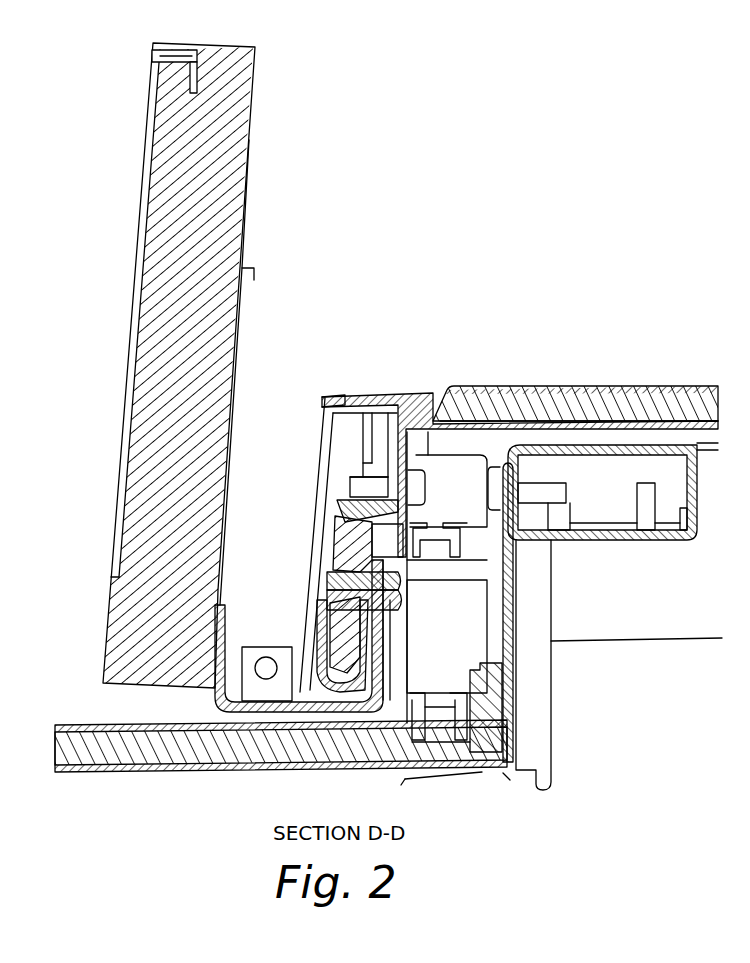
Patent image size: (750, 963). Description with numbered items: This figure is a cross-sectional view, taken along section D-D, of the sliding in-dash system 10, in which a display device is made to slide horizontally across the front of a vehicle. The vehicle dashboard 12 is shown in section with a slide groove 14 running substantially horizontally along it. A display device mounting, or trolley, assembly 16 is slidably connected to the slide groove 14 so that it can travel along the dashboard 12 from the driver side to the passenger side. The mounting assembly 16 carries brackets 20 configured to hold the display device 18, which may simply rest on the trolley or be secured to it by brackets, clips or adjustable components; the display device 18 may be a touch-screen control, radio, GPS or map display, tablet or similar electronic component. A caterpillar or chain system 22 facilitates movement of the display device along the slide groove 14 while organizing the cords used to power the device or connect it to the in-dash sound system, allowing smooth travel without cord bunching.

The sliding in-dash system 10 is at (530, 240).
The vehicle dashboard 12 is at (621, 385).
The slide grooves 14 is at (482, 422).
The display device mounting assembly 16 is at (250, 126).
The display device 18 is at (112, 565).
The brackets 20 is at (250, 276).
The chain system 22 is at (463, 550).